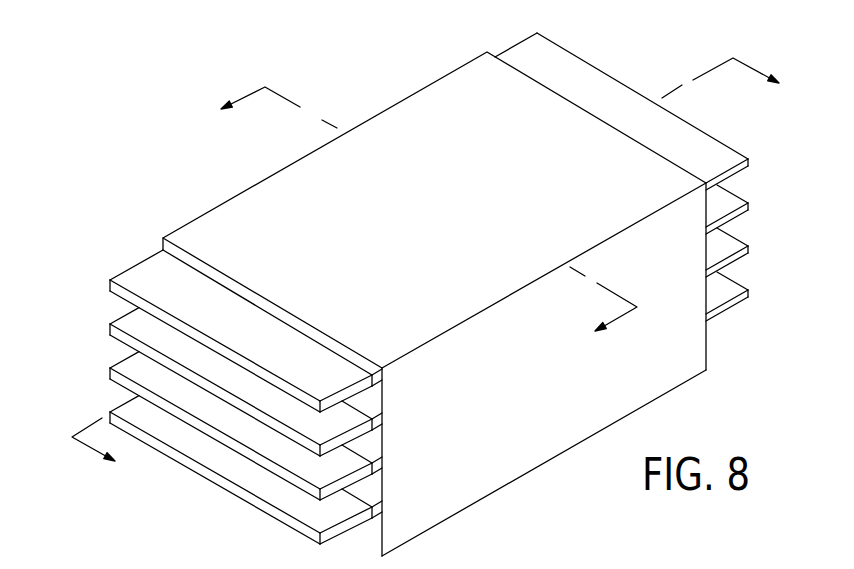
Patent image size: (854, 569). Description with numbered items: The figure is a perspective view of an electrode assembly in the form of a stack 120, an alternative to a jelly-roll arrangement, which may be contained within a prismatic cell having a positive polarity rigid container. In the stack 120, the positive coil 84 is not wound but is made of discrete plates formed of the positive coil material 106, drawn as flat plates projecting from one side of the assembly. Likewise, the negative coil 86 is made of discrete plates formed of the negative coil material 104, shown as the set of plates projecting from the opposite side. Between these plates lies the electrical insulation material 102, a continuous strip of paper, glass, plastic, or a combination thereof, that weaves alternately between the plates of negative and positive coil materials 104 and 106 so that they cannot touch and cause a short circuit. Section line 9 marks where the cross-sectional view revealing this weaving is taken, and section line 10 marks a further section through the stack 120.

The stack 120 is at (185, 52).
The electrical insulation material 102 is at (503, 474).
The positive coil 84 is at (624, 80).
The positive coil material 106 is at (718, 155).
The negative coil 86 is at (207, 399).
The negative coil material 104 is at (305, 515).
The section line 9- 9 is at (421, 219).
The section line 10- 10 is at (438, 274).